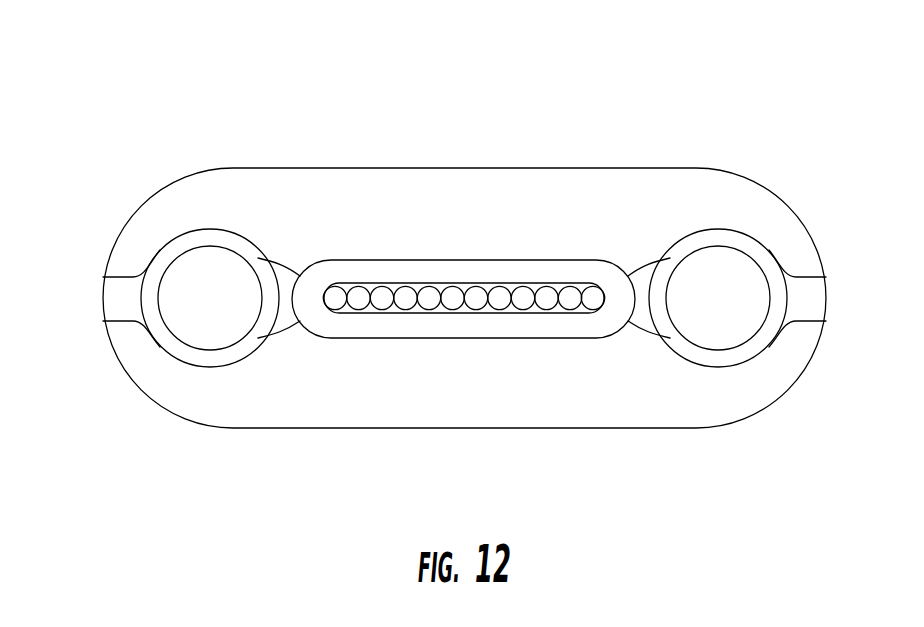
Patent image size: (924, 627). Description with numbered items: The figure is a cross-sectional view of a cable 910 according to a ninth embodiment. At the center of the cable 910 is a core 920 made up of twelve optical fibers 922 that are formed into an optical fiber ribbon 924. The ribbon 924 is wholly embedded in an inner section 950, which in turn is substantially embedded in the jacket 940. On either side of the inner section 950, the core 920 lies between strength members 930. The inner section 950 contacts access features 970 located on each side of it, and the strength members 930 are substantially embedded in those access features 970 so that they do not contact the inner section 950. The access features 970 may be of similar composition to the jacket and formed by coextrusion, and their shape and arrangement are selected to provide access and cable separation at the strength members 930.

The cable 910 is at (110, 110).
The core 920 is at (537, 332).
The optical fibers 922 is at (432, 302).
The optical fiber ribbon 924 is at (467, 308).
The strength members 930 is at (220, 337).
The jacket 940 is at (512, 185).
The inner section 950 is at (338, 274).
The access features 970 is at (136, 296).